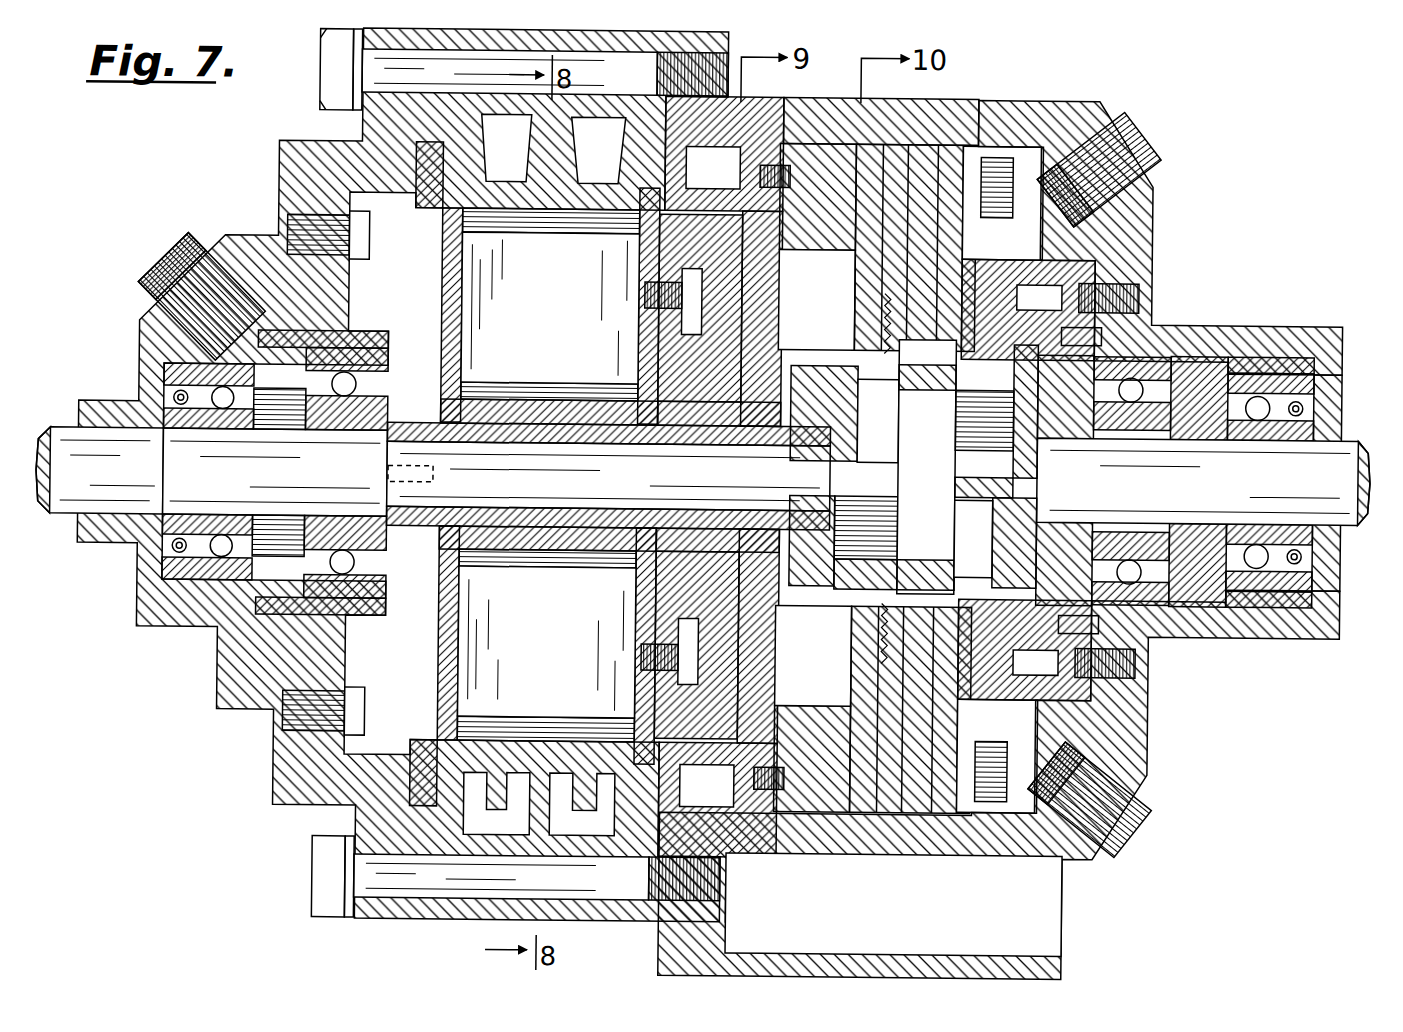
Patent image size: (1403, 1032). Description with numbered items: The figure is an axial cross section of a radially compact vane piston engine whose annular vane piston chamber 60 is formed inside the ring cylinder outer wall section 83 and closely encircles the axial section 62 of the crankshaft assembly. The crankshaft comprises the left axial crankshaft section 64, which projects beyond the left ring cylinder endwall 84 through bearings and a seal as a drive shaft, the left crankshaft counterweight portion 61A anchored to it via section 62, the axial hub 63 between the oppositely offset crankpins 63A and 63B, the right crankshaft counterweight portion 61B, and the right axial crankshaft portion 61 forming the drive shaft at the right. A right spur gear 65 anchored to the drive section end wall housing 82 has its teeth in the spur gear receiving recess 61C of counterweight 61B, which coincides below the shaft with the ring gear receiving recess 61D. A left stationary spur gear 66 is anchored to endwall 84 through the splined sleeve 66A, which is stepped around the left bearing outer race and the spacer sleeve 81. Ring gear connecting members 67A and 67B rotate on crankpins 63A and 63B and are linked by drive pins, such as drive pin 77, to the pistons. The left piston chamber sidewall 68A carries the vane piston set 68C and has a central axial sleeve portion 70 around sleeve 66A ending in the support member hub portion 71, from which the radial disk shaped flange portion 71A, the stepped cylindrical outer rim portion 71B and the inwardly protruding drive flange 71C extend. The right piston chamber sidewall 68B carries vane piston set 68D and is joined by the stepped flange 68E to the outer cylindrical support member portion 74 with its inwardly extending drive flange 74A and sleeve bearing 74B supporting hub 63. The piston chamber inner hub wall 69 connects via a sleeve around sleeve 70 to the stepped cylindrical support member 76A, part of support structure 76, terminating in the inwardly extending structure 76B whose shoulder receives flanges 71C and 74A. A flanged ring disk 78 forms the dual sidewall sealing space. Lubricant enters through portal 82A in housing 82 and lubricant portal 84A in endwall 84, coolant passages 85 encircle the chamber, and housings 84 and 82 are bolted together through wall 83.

The annular vane piston chamber 60 is at (497, 735).
The right axial crankshaft portion 61 is at (1365, 435).
The left crankshaft counterweight portion 61A is at (815, 477).
The right crankshaft counterweight portion 61B is at (1027, 479).
The spur gear receiving recess 61C is at (1090, 328).
The ring gear receiving recess 61D is at (1090, 288).
The axial crankshaft section 62 is at (506, 491).
The axial crankshaft hub 63 is at (906, 478).
The left crankpin 63A is at (866, 528).
The right crankpin 63B is at (962, 444).
The left axial crankshaft section 64 is at (62, 505).
The right spur gear 65 is at (1163, 342).
The left stationary spur gear 66 is at (782, 462).
The splined sleeve 66A is at (393, 432).
The left ring gear connecting member 67A is at (845, 205).
The right ring gear connecting member 67B is at (1170, 727).
The left piston chamber sidewall 68A is at (461, 322).
The right piston chamber sidewall 68B is at (637, 354).
The vane piston set 68C is at (526, 293).
The vane piston set 68D is at (528, 669).
The stepped flange 68E is at (710, 476).
The piston chamber inner hub wall 69 is at (546, 382).
The central axial sleeve portion 70 is at (570, 428).
The support member hub portion 71 is at (702, 410).
The radial disk shaped flange portion 71A is at (757, 264).
The stepped cylindrical outer rim portion 71B is at (880, 192).
The inwardly protruding drive flange 71C is at (905, 215).
The outer cylindrical support member portion 74 is at (790, 172).
The inwardly extending drive flange 74A is at (920, 230).
The sleeve bearing 74B is at (928, 388).
The plate stack 76 is at (862, 150).
The stepped cylindrical support member 76A is at (747, 318).
The inwardly extending structure 76B is at (1135, 155).
The drive pin 77 is at (890, 318).
The flanged ring disk 78 is at (698, 254).
The spacer sleeve 81 is at (262, 352).
The drive section end wall housing 82 is at (1150, 210).
The lubricant entrance portal 82A is at (1113, 120).
The ring cylinder outer wall section 83 is at (494, 42).
The left ring cylinder endwall 84 is at (250, 236).
The lubricant portal 84A is at (192, 285).
The coolant passages 85 is at (593, 822).